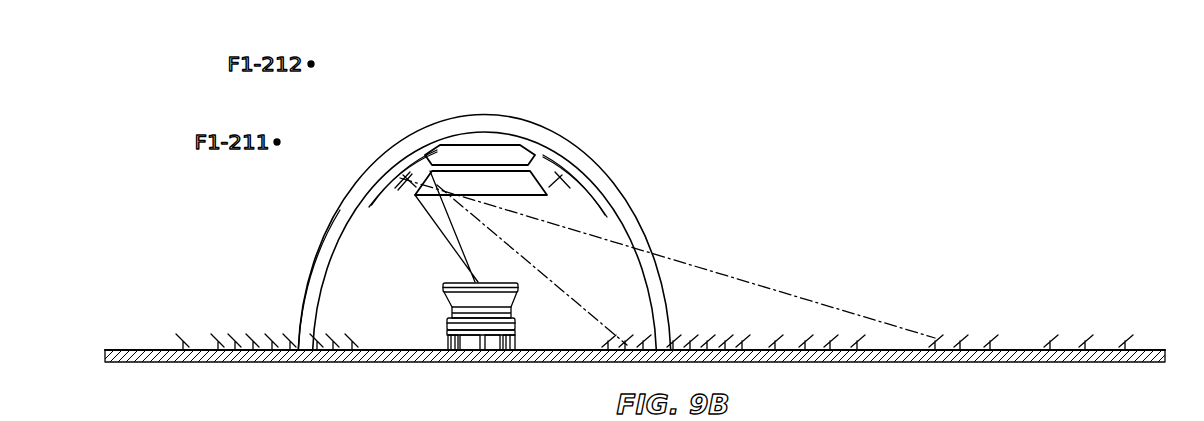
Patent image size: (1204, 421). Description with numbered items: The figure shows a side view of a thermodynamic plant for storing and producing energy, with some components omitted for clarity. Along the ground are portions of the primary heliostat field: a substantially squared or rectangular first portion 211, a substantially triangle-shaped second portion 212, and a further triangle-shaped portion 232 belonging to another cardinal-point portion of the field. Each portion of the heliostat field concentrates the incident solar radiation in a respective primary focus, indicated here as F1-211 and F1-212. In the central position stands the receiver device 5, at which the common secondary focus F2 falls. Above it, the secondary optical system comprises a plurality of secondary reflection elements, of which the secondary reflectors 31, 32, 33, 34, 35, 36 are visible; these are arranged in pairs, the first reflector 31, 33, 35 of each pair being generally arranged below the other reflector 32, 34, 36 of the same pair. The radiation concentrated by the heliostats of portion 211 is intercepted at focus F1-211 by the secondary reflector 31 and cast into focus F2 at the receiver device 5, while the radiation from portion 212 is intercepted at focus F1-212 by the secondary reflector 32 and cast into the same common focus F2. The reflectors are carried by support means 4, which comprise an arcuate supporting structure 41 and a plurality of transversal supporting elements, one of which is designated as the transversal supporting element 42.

The support means 4 is at (645, 240).
The receiver device 5 is at (447, 306).
The secondary reflector 31 is at (398, 172).
The secondary reflector 32 is at (424, 160).
The secondary reflector 33 is at (490, 180).
The secondary reflector 34 is at (481, 153).
The secondary reflector 35 is at (552, 173).
The secondary reflector 36 is at (538, 160).
The arcuate supporting structure 41 is at (298, 297).
The transversal supporting element 42 is at (400, 176).
The first portion of heliostat field 211 is at (990, 340).
The second portion of heliostat field 212 is at (690, 340).
The second portion of heliostat field 232 is at (217, 340).